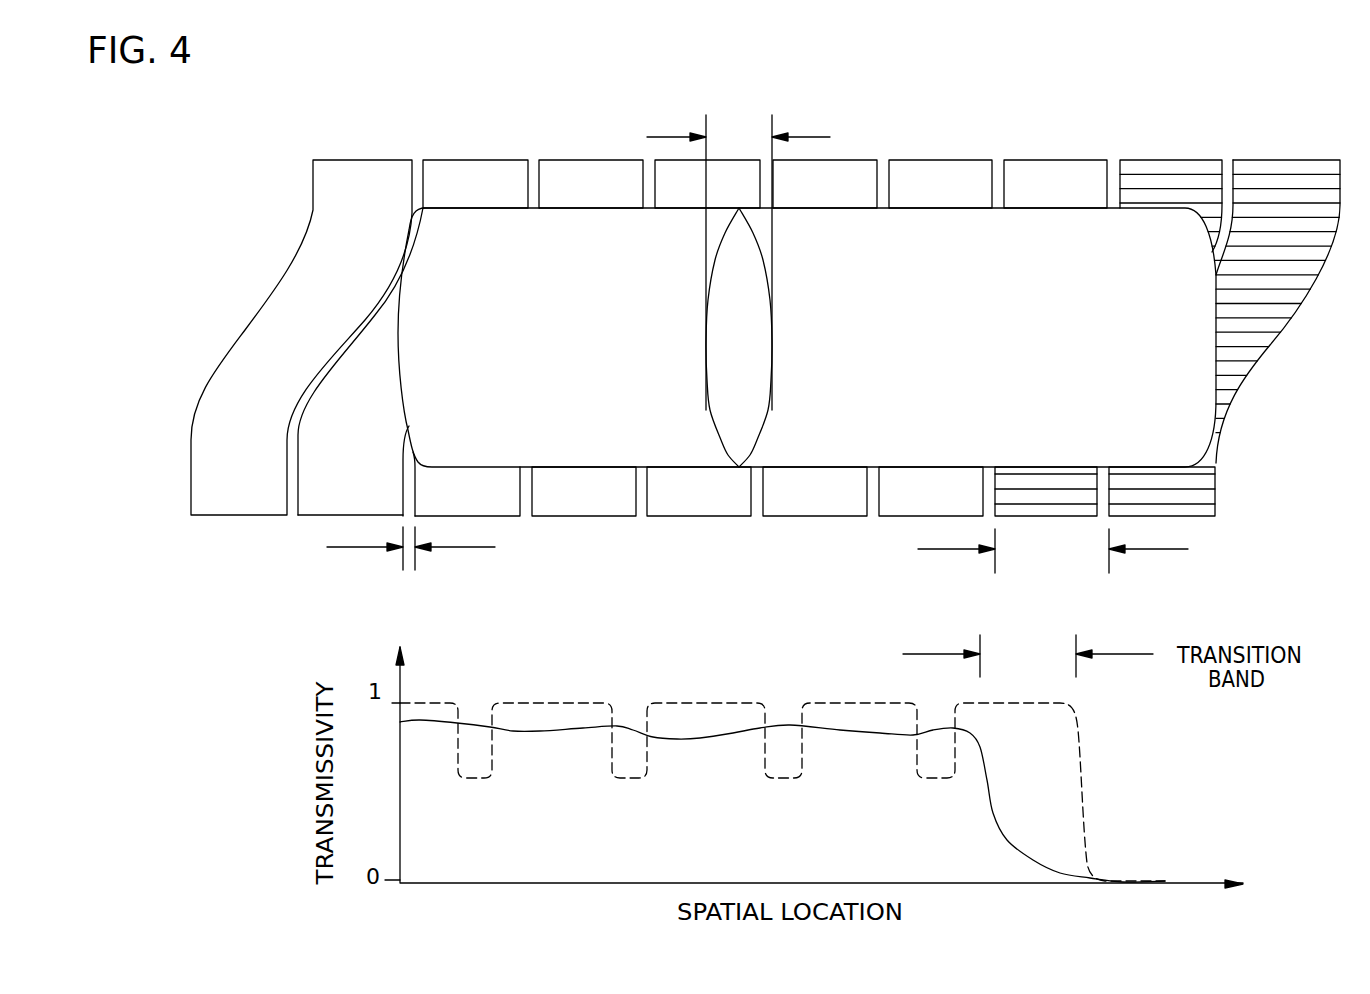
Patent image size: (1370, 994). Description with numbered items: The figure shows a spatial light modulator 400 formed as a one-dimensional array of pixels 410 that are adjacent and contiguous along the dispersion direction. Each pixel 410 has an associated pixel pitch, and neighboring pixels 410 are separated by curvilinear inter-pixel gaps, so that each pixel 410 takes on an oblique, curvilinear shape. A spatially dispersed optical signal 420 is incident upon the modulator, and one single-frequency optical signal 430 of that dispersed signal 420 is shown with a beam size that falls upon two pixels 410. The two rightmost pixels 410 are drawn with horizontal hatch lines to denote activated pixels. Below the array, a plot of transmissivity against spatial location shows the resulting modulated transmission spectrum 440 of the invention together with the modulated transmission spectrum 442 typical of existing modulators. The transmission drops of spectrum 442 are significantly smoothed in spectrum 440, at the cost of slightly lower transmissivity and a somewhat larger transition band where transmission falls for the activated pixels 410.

The spatial light modulator 400 is at (151, 106).
The pixel 410 is at (470, 169).
The spatially dispersed optical signal 420 is at (413, 233).
The single-frequency optical signal 430 is at (715, 436).
The modulated transmission spectrum 440 is at (535, 730).
The modulated transmission spectrum 442 is at (630, 777).